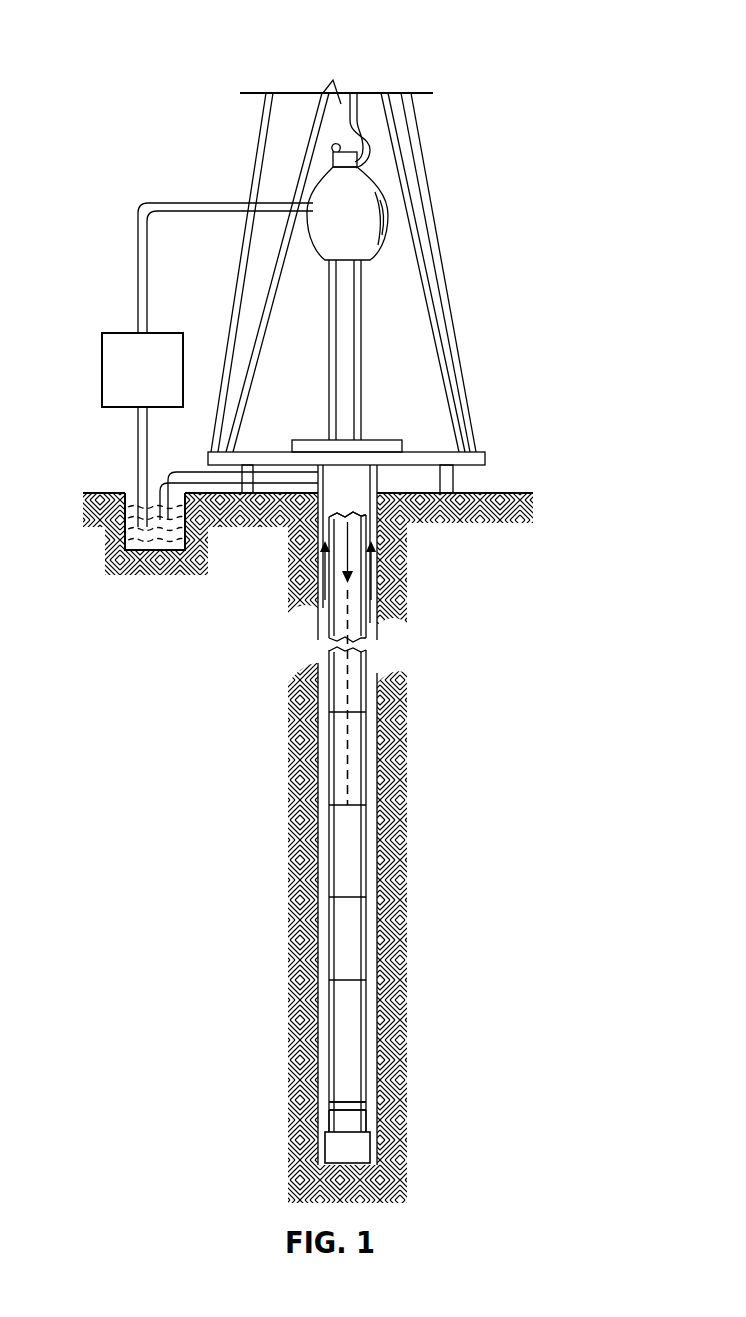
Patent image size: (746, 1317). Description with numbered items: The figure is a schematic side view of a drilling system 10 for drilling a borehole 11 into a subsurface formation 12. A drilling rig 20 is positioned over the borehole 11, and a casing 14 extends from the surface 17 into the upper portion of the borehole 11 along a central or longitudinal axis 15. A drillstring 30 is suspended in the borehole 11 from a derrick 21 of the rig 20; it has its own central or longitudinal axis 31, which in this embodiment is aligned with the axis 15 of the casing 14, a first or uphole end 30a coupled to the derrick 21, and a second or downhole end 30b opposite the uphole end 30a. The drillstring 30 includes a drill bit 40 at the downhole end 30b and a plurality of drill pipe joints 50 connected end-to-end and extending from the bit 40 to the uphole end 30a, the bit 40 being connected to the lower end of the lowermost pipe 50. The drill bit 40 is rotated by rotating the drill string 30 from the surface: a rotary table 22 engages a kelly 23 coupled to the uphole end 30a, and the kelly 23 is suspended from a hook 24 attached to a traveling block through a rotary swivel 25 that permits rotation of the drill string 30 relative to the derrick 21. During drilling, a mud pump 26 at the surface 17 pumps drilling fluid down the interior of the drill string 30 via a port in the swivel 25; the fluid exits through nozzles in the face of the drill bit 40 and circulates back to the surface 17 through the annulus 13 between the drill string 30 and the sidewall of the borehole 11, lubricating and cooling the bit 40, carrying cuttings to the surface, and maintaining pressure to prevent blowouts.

The drilling system 10 is at (88, 42).
The borehole 11 is at (368, 625).
The subsurface formation 12 is at (457, 798).
The annulus 13 is at (323, 940).
The casing 14 is at (318, 897).
The central or longitudinal axis 15 is at (347, 750).
The surface 17 is at (487, 492).
The drilling rig 20 is at (516, 478).
The derrick 21 is at (258, 130).
The rotary table 22 is at (372, 442).
The kelly 23 is at (330, 312).
The hook 24 is at (346, 123).
The rotary swivel 25 is at (362, 194).
The mud pump 26 is at (100, 372).
The drillstring 30 is at (318, 702).
The uphole end 30a is at (380, 528).
The downhole end 30b is at (363, 1122).
The central or longitudinal axis 31 is at (347, 750).
The drill bit 40 is at (325, 1143).
The drill pipe joints 50 is at (298, 688).